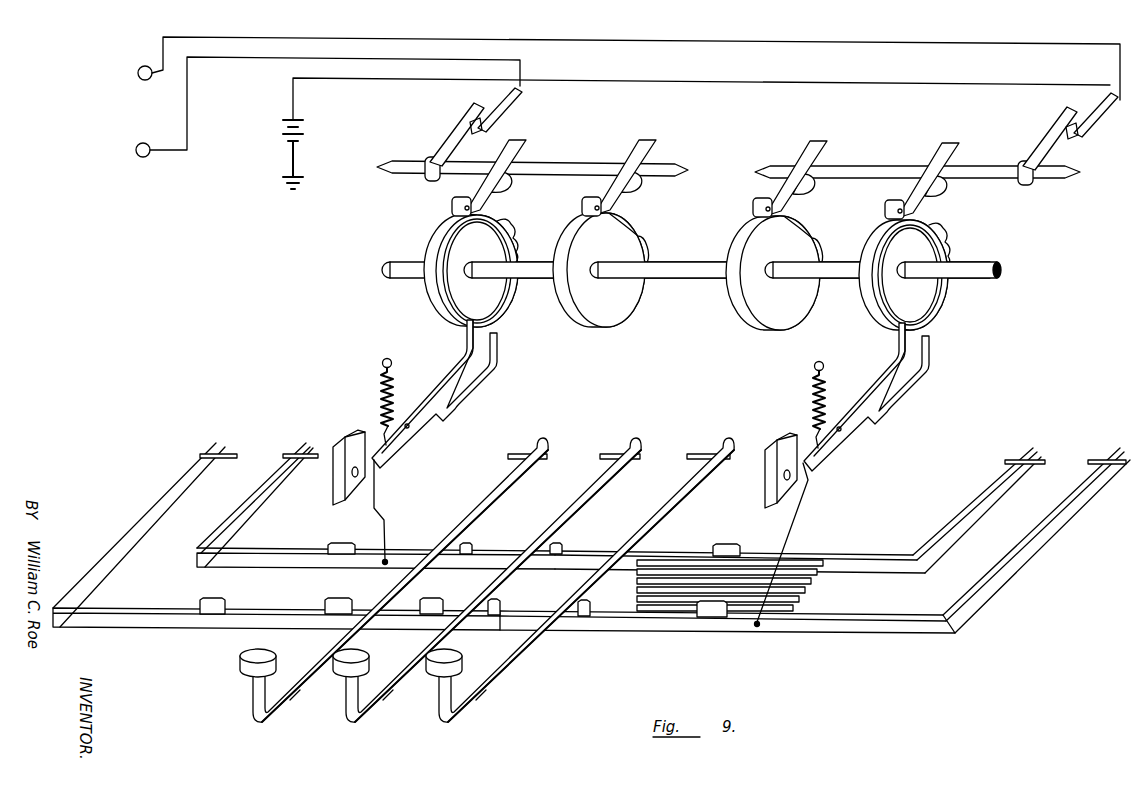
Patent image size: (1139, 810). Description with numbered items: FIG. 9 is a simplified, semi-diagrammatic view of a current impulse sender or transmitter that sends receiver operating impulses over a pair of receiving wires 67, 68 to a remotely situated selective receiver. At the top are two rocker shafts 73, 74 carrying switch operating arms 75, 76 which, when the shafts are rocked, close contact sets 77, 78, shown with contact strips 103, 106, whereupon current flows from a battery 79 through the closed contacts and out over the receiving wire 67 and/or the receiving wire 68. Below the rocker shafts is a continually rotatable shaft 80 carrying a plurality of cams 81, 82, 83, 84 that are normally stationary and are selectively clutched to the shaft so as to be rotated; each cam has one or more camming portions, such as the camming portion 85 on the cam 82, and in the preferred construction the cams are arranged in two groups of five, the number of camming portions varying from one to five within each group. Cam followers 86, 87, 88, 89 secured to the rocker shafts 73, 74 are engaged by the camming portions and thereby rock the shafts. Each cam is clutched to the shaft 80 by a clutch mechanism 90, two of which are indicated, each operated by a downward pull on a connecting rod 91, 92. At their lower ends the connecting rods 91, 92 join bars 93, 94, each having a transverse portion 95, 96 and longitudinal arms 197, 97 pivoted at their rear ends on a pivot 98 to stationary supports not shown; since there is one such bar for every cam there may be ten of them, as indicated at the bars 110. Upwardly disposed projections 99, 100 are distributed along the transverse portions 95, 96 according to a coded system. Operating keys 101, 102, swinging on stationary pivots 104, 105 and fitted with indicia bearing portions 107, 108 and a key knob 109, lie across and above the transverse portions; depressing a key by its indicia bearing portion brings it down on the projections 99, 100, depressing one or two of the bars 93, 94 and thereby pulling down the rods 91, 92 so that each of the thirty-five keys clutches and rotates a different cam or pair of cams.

The receiving wire 67 is at (149, 80).
The receiving wire 68 is at (150, 155).
The battery 79 is at (304, 134).
The rocker shaft 73 is at (560, 163).
The rocker shaft 74 is at (878, 164).
The switch operating arm 75 is at (440, 145).
The switch operating arm 76 is at (1044, 138).
The contact set 77 is at (505, 110).
The contact set 78 is at (1098, 125).
The continually rotatable shaft 80 is at (980, 281).
The cam 81 is at (438, 234).
The cam 82 is at (624, 263).
The cam 83 is at (740, 233).
The cam 84 is at (880, 229).
The camming portion 85 is at (650, 228).
The cam follower 86 is at (455, 197).
The cam follower 87 is at (585, 197).
The cam follower 88 is at (757, 196).
The cam follower 89 is at (890, 196).
The clutch mechanism 90 is at (437, 370).
The connecting rod 91 is at (378, 493).
The connecting rod 92 is at (800, 502).
The bar 93 is at (280, 568).
The bar 94 is at (181, 629).
The transverse portion 95 is at (680, 555).
The transverse portion 96 is at (605, 633).
The longitudinal arm 97 is at (158, 503).
The longitudinal arm 197 is at (268, 512).
The pivot 98 is at (286, 452).
The projection 99 is at (341, 542).
The projection 100 is at (340, 599).
The operating key 101 is at (288, 698).
The operating key 102 is at (383, 698).
The contact strip 103 is at (474, 695).
The stationary pivot 104 is at (550, 455).
The stationary pivot 105 is at (642, 455).
The contact strip 106 is at (728, 452).
The indicia bearing portion 107 is at (248, 671).
The indicia bearing portion 108 is at (342, 672).
The key knob 109 is at (436, 672).
The bars 110 is at (690, 596).